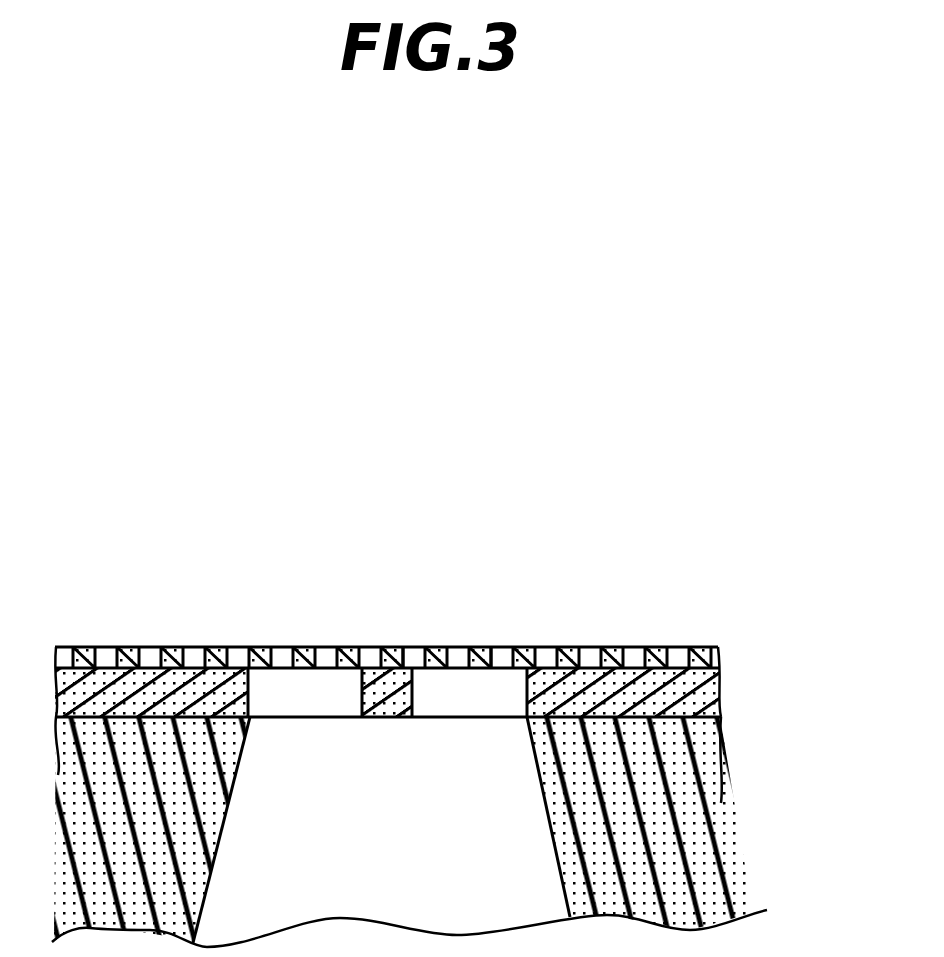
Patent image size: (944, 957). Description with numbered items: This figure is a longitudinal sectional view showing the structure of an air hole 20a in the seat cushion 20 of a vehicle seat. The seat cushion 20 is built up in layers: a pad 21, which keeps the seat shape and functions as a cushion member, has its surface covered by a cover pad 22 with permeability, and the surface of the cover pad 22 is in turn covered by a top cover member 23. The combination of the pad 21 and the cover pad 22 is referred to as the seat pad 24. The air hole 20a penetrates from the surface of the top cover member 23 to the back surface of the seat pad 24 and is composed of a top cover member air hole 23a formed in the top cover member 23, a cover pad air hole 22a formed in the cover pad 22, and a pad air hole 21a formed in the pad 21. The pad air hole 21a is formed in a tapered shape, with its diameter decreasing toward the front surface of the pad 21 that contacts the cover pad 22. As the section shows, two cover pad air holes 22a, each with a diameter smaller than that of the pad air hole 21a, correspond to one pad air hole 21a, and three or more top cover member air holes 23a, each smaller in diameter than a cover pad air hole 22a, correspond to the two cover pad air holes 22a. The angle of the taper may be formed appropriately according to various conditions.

The seat cushion 20 is at (729, 592).
The air hole 20a is at (342, 645).
The pad 21 is at (705, 765).
The pad air hole 21a is at (222, 836).
The cover pad 22 is at (708, 690).
The cover pad air hole 22a is at (250, 700).
The top cover member 23 is at (705, 645).
The top cover member air hole 23a is at (415, 648).
The seat pad 24 is at (847, 670).